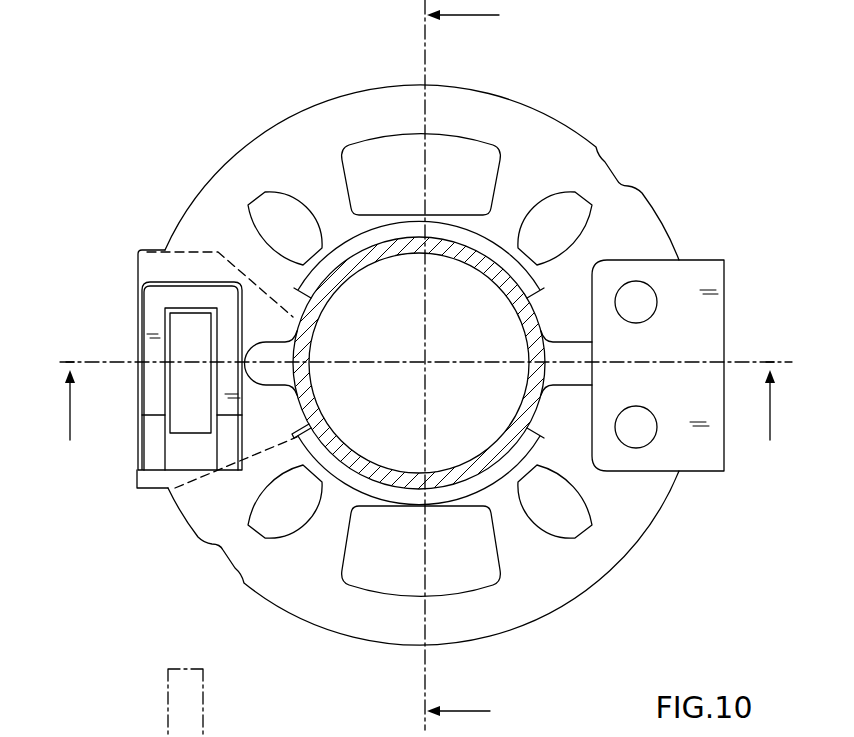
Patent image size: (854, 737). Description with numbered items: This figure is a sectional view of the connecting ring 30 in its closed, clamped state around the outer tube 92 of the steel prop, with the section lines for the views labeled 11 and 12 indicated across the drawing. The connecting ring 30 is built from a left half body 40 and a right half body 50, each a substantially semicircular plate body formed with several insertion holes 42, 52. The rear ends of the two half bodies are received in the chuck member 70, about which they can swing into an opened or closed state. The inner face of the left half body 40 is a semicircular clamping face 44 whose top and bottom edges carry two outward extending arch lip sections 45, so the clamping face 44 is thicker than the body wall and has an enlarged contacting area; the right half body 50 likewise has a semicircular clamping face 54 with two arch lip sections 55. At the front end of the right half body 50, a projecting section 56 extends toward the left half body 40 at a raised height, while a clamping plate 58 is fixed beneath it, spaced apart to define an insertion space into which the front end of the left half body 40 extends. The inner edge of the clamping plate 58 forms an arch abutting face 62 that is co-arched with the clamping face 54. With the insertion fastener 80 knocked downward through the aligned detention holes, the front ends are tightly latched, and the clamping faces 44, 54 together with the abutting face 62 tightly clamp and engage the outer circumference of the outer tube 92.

The connecting ring 30 is at (421, 373).
The left half body 40 is at (610, 103).
The insertion holes 42 is at (378, 152).
The clamping face 44 is at (485, 257).
The arch lip sections 45 is at (347, 240).
The right half body 50 is at (669, 539).
The insertion holes 52 is at (560, 517).
The clamping face 54 is at (342, 475).
The arch lip sections 55 is at (395, 504).
The projecting section 56 is at (157, 322).
The clamping plate 58 is at (190, 266).
The abutting face 62 is at (320, 315).
The chuck member 70 is at (700, 442).
The insertion fastener 80 is at (187, 395).
The outer tube 92 is at (492, 454).
The section line 11- 11 is at (425, 415).
The section line 12- 12 is at (350, 368).